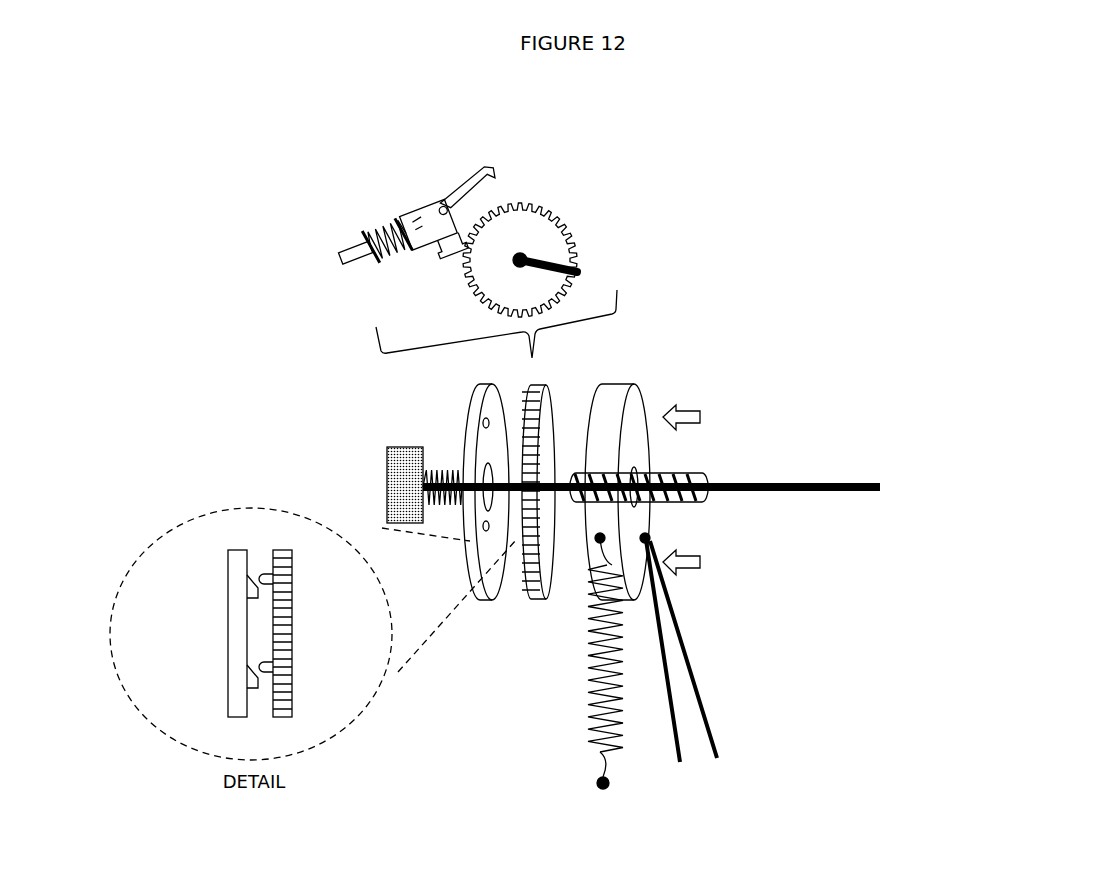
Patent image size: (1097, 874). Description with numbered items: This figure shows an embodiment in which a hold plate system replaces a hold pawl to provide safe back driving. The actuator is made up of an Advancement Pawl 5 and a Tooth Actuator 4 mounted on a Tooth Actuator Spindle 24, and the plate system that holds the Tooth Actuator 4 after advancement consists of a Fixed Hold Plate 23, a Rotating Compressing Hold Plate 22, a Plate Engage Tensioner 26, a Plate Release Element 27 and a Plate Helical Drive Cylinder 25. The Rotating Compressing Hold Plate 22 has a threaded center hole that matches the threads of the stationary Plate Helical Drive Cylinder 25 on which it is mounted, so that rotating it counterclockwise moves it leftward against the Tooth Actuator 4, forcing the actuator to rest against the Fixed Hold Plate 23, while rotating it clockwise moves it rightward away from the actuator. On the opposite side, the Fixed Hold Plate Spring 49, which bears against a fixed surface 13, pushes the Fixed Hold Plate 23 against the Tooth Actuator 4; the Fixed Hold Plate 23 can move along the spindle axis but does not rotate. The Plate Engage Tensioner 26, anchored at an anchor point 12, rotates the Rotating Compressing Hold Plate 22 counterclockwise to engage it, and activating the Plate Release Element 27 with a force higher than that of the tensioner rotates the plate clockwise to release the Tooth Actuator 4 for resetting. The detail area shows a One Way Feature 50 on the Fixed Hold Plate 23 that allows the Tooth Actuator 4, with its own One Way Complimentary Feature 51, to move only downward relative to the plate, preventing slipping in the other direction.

The advancement pawl 5 is at (412, 212).
The tooth actuator 4 is at (528, 238).
The tooth actuator spindle 24 is at (573, 262).
The rotating compressing hold plate 22 is at (613, 402).
The fixed hold plate 23 is at (477, 421).
The fixed hold plate spring 49 is at (445, 462).
The fixed surface 13 is at (386, 487).
The plate helical drive cylinder 25 is at (670, 503).
The plate release element 27 is at (693, 668).
The plate engage tensioner 26 is at (587, 716).
The anchor point 12 is at (597, 783).
The one way feature 50 is at (247, 594).
The one way complimentary feature 51 is at (265, 680).